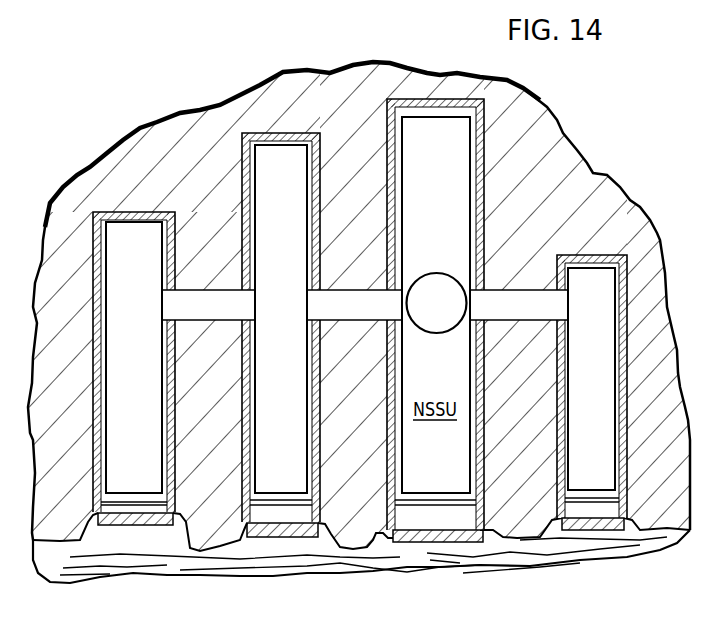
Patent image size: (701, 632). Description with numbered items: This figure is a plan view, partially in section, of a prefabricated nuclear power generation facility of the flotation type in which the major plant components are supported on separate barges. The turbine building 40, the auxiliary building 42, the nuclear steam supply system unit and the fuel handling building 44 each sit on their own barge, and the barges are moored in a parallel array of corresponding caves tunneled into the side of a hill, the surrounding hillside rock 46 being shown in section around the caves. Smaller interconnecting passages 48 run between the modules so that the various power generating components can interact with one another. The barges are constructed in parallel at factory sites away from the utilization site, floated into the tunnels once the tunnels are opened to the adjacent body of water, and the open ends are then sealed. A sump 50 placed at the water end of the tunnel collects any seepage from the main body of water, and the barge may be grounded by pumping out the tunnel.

The turbine building 40 is at (144, 421).
The auxiliary building 42 is at (293, 421).
The fuel handling building 44 is at (603, 421).
The substrate body 46 is at (543, 198).
The interconnecting passages 48 is at (222, 318).
The sump 50 is at (457, 510).